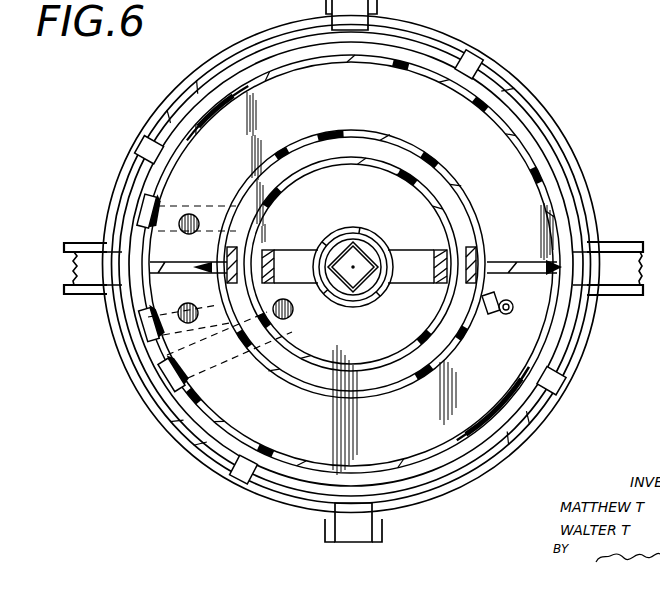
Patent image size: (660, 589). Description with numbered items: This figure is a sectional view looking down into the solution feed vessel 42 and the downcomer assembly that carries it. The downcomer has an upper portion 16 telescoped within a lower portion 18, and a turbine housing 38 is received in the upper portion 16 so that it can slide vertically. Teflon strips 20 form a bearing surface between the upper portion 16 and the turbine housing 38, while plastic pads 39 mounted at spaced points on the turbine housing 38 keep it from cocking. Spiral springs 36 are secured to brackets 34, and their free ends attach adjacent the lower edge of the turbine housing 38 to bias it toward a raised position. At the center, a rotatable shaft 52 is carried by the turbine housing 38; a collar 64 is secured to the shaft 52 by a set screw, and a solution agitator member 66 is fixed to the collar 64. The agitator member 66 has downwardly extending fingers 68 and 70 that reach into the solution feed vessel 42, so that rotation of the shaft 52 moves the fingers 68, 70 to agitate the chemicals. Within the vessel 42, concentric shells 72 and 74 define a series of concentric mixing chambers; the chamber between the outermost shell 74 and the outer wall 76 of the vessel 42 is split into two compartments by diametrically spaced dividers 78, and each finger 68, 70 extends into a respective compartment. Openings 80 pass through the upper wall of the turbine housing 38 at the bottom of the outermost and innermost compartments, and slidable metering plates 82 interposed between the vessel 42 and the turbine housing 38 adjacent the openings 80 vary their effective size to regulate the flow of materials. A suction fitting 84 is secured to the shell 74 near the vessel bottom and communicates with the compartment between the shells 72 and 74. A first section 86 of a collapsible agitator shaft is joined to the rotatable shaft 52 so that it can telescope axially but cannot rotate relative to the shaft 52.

The upper portion 16 is at (512, 78).
The lower portion 18 is at (659, 21).
The Teflon strips 20 is at (523, 100).
The brackets 34 is at (618, 238).
The spiral springs 36 is at (620, 295).
The turbine housing 38 is at (560, 160).
The pads 39 is at (477, 57).
The solution feed vessel 42 is at (353, 111).
The shaft 52 is at (368, 242).
The collar 64 is at (321, 238).
The solution agitator member 66 is at (425, 278).
The finger 68 is at (262, 247).
The finger 70 is at (238, 250).
The shell 72 is at (413, 180).
The shell 74 is at (426, 157).
The outer wall 76 is at (508, 143).
The dividers 78 is at (181, 273).
The openings 80 is at (190, 213).
The metering plates 82 is at (143, 202).
The suction fitting 84 is at (484, 320).
The first section 86 is at (366, 296).